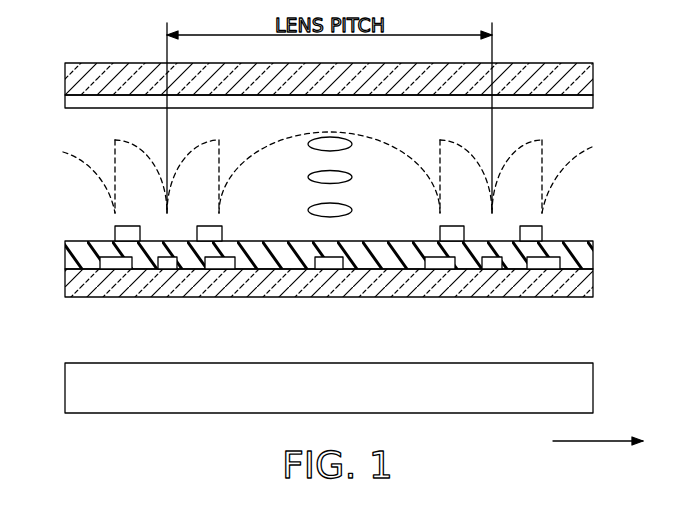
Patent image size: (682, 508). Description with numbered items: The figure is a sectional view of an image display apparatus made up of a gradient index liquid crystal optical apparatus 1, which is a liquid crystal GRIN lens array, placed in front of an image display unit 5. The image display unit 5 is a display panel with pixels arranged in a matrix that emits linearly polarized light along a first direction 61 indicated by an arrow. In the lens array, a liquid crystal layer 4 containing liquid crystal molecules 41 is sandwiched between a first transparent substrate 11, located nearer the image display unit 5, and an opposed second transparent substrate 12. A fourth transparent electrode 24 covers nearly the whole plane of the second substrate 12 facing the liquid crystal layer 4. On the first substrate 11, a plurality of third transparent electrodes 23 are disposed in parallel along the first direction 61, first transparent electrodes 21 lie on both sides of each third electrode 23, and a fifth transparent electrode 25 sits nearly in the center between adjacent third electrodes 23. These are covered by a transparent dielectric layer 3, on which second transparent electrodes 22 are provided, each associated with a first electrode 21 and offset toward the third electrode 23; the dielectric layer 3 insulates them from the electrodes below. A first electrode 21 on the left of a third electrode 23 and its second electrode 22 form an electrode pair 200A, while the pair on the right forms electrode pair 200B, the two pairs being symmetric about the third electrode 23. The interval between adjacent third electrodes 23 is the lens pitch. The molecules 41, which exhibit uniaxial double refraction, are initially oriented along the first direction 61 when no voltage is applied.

The gradient index liquid crystal optical apparatus 1 is at (629, 58).
The second transparent substrate 12 is at (65, 78).
The fourth transparent electrode 24 is at (65, 103).
The liquid crystal layer 4 is at (593, 107).
The liquid crystal molecules 41 is at (341, 147).
The transparent dielectric layer 3 is at (65, 255).
The first transparent substrate 11 is at (65, 283).
The first transparent electrode 21 is at (112, 268).
The second transparent electrode 22 is at (128, 240).
The third transparent electrode 23 is at (168, 268).
The fifth transparent electrode 25 is at (330, 268).
The electrode pair 200A is at (150, 324).
The electrode pair 200B is at (202, 324).
The image display unit 5 is at (585, 387).
The first direction 61 is at (584, 443).